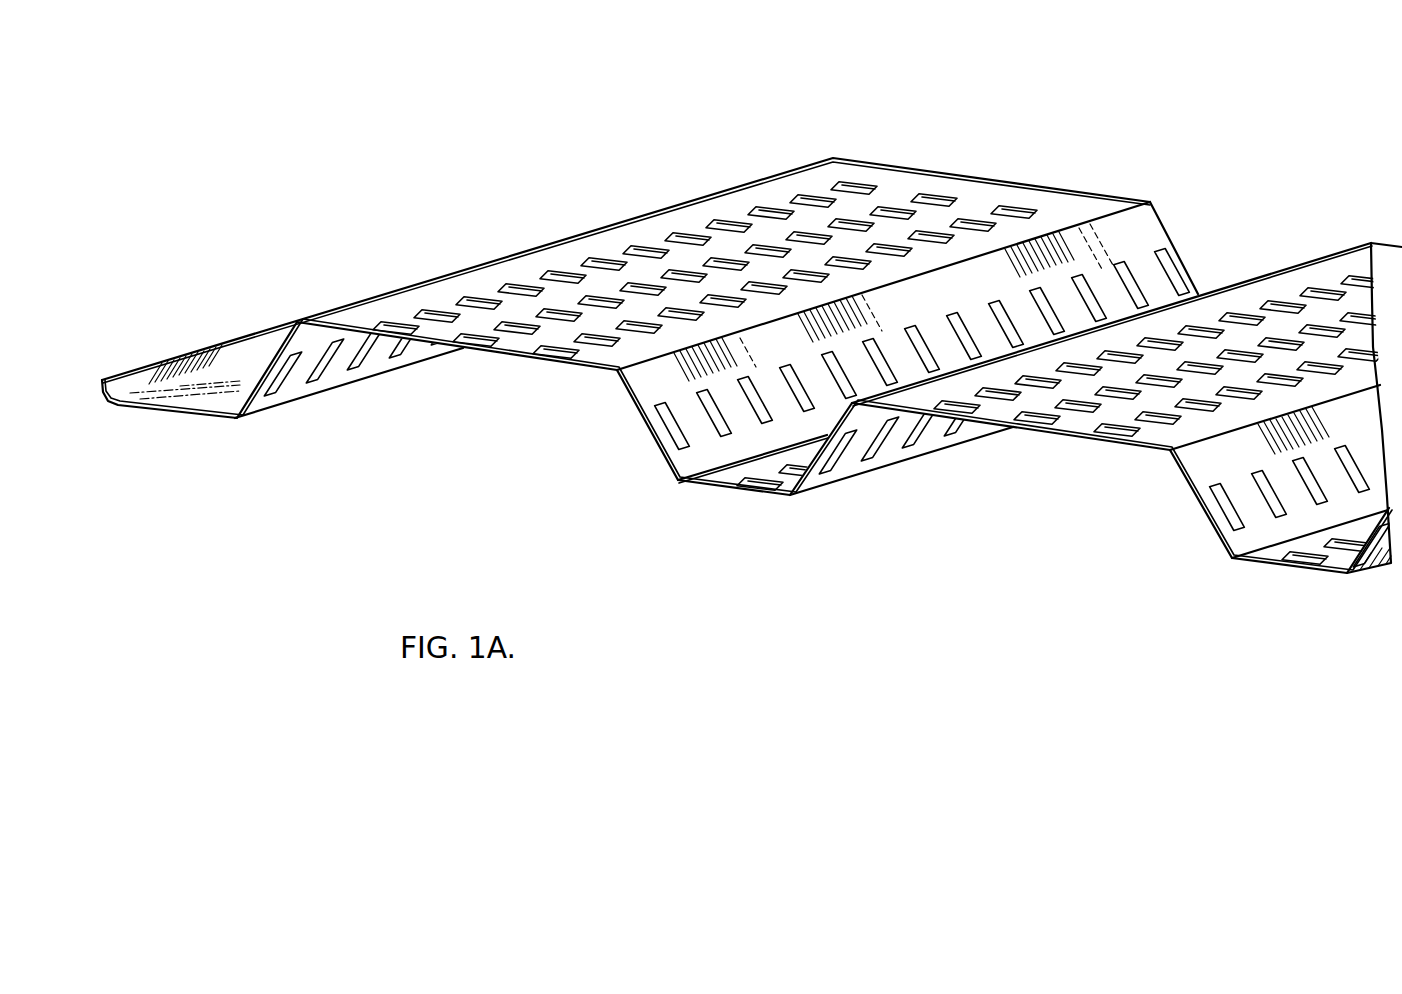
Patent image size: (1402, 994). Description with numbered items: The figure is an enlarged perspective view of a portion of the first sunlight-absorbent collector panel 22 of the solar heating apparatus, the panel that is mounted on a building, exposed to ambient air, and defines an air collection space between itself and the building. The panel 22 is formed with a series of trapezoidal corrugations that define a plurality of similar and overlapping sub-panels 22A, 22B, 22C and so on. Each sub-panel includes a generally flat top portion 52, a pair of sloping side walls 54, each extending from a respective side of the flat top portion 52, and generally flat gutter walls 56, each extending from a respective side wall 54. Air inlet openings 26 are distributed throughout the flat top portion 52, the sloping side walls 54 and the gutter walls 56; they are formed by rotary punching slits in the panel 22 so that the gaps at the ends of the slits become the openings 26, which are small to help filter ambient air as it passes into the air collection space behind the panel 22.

The first sunlight-absorbent collector panel 22 is at (752, 347).
The sub-panel 22A is at (440, 335).
The sub-panel 22B is at (1063, 432).
The sub-panel 22C is at (1374, 560).
The air inlet openings 26 is at (473, 302).
The flat top portion 52 is at (512, 340).
The sloping side walls 54 is at (650, 390).
The gutter walls 56 is at (784, 498).